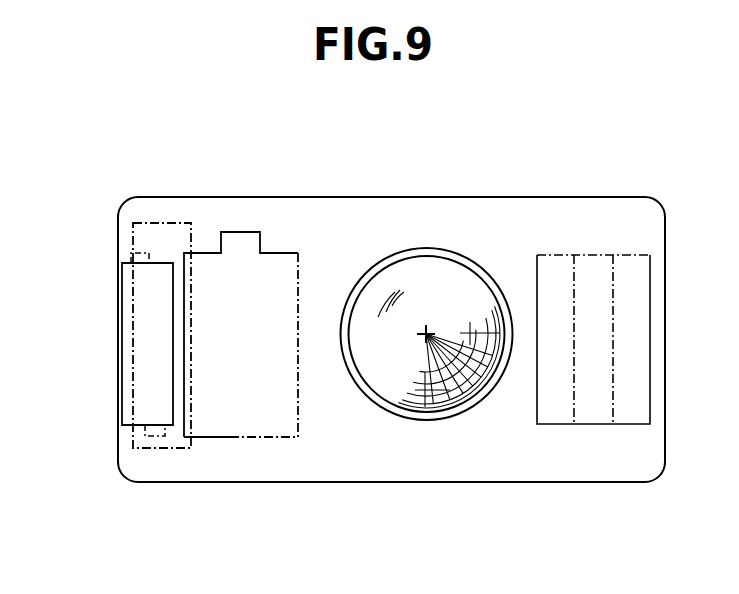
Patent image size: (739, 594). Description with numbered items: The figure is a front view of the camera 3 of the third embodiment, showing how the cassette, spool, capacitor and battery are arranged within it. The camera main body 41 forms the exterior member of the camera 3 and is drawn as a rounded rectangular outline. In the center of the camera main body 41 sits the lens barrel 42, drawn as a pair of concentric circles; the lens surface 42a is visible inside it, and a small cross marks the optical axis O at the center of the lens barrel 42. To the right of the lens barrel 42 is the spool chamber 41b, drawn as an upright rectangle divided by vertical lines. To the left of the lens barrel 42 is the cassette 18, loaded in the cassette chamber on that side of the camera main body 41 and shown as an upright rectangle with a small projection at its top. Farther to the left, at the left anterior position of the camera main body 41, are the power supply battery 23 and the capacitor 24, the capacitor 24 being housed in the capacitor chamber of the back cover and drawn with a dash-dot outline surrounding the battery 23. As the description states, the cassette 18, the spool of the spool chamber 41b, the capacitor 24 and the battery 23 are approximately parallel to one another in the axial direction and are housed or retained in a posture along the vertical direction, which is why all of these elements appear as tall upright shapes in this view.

The camera 3 is at (595, 169).
The camera main body 41 is at (518, 483).
The spool chamber 41b is at (633, 425).
The lens barrel 42 is at (410, 248).
The lens surface 42a is at (455, 285).
The optical axis O is at (418, 343).
The cassette 18 is at (250, 437).
The power supply battery 23 is at (147, 378).
The capacitor 24 is at (170, 452).